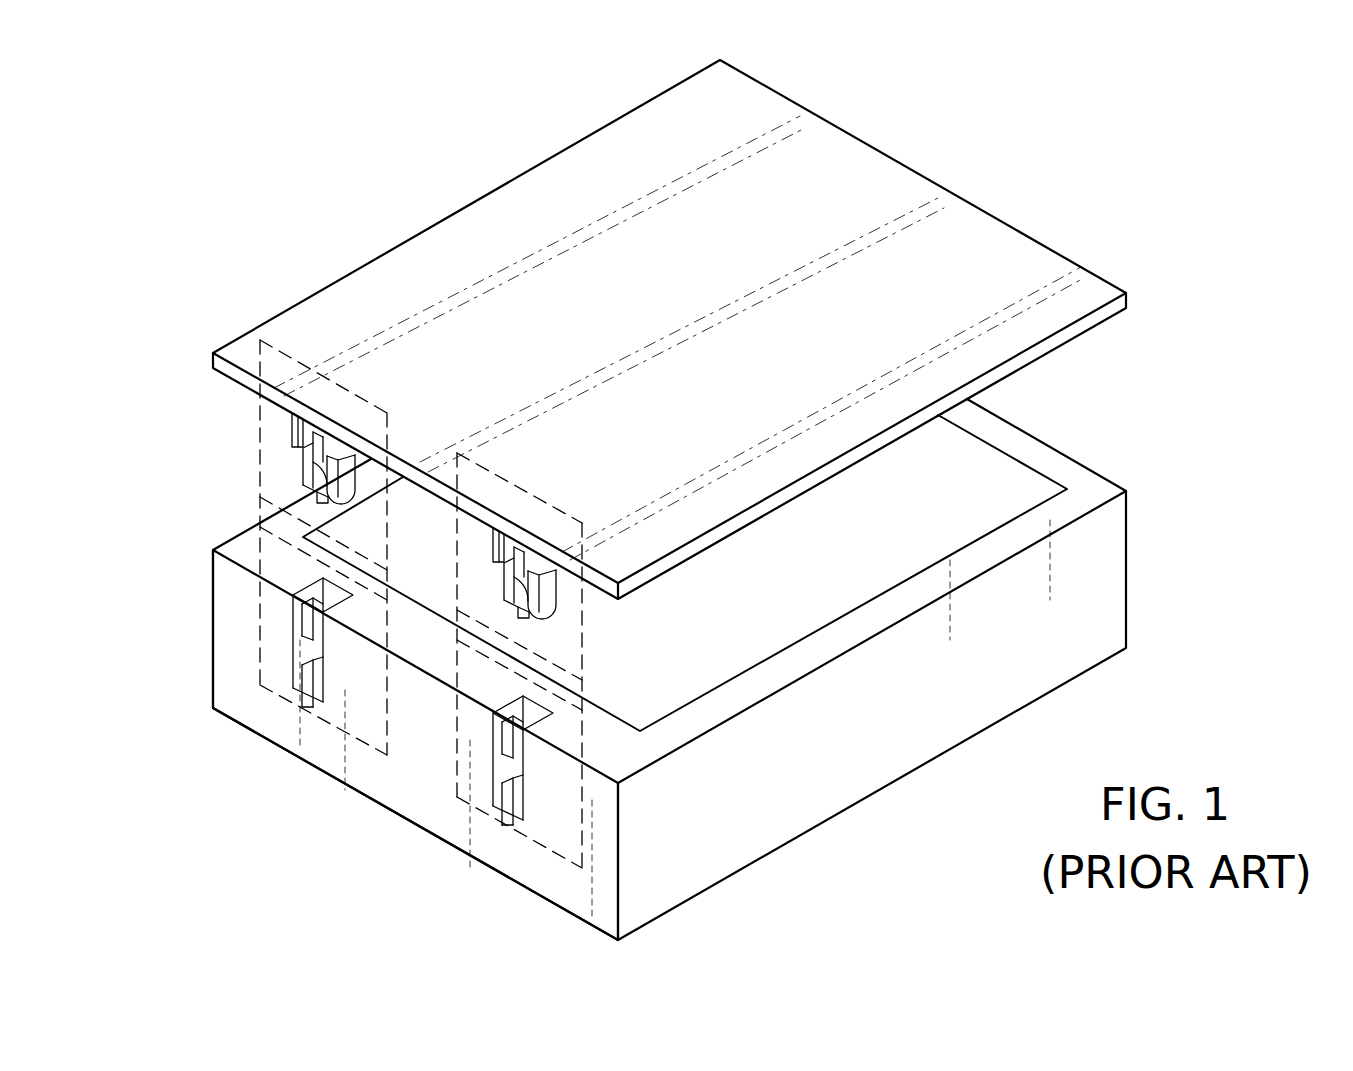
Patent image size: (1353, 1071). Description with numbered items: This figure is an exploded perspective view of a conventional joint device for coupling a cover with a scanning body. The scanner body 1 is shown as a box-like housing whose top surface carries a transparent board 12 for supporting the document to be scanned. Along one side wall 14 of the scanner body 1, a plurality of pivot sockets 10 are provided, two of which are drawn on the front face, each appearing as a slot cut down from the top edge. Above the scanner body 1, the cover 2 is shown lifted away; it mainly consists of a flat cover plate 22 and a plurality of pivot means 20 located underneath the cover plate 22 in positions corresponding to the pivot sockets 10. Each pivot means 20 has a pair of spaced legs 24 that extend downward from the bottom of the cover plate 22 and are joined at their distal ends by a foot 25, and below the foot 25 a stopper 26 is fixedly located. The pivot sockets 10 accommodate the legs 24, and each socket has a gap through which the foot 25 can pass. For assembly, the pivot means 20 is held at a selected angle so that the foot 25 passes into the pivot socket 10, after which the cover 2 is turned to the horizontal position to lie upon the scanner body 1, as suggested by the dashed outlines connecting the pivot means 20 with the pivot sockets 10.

The scanner body 1 is at (1163, 486).
The cover 2 is at (1163, 331).
The pivot sockets 10 is at (266, 612).
The transparent board 12 is at (828, 600).
The side wall 14 is at (390, 780).
The pivot means 20 is at (273, 470).
The cover plate 22 is at (296, 327).
The legs 24 is at (551, 598).
The foot 25 is at (497, 570).
The stopper 26 is at (503, 600).